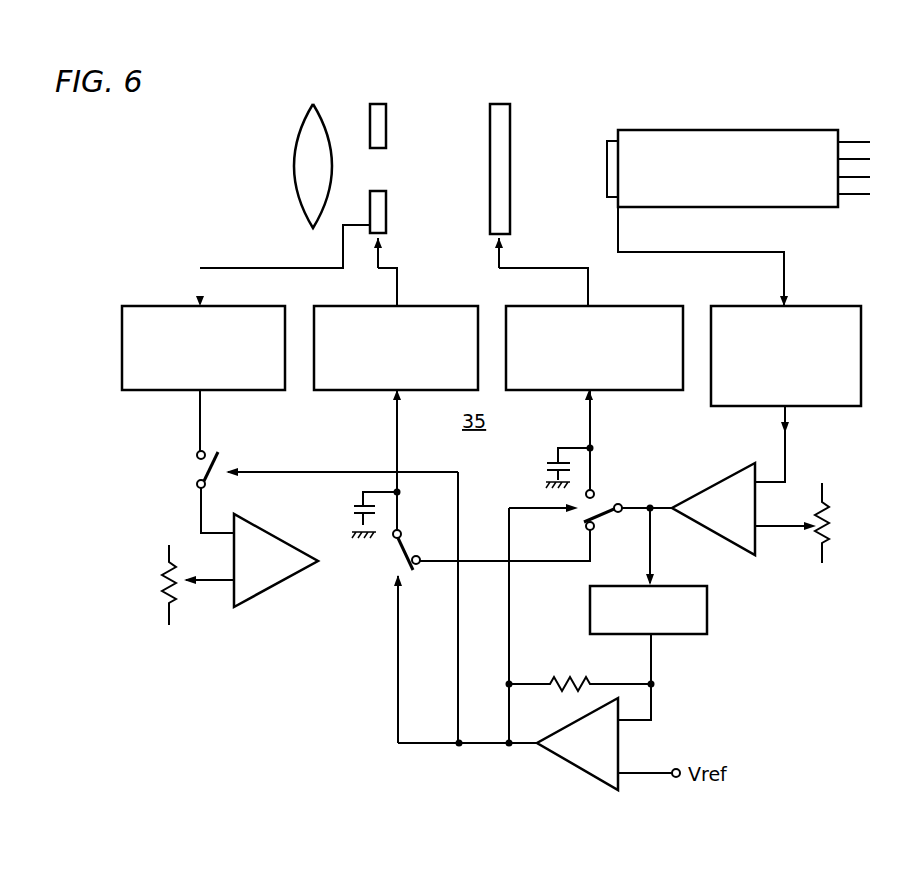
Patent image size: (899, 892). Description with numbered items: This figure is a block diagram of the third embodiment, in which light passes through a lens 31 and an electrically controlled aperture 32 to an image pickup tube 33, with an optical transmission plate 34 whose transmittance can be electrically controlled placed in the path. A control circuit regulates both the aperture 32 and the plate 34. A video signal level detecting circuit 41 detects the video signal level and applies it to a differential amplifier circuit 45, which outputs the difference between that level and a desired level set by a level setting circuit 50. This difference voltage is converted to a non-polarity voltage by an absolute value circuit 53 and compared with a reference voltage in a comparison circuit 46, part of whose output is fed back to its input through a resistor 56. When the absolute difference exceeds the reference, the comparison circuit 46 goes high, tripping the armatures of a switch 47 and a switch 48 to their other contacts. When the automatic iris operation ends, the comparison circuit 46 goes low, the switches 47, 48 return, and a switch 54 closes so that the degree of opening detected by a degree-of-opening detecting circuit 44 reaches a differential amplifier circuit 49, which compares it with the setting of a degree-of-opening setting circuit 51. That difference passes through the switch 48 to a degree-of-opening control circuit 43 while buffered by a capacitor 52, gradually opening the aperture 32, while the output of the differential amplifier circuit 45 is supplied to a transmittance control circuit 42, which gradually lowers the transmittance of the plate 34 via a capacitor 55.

The lens 31 is at (318, 104).
The aperture 32 is at (380, 104).
The image pickup tube 33 is at (733, 130).
The optical transmission plate 34 is at (510, 124).
The video signal level detecting circuit 41 is at (829, 306).
The transmittance control circuit 42 is at (642, 306).
The degree-of-opening control circuit 43 is at (425, 306).
The degree-of-opening detecting circuit 44 is at (164, 305).
The differential amplifier circuit 45 is at (720, 478).
The comparison circuit 46 is at (558, 755).
The switch 47 is at (605, 504).
The switch 48 is at (406, 572).
The differential amplifier circuit 49 is at (266, 527).
The level setting circuit 50 is at (826, 510).
The degree-of-opening setting circuit 51 is at (171, 603).
The capacitor 52 is at (352, 508).
The absolute value circuit 53 is at (707, 614).
The switch 54 is at (196, 470).
The capacitor 55 is at (546, 470).
The resistor 56 is at (560, 683).